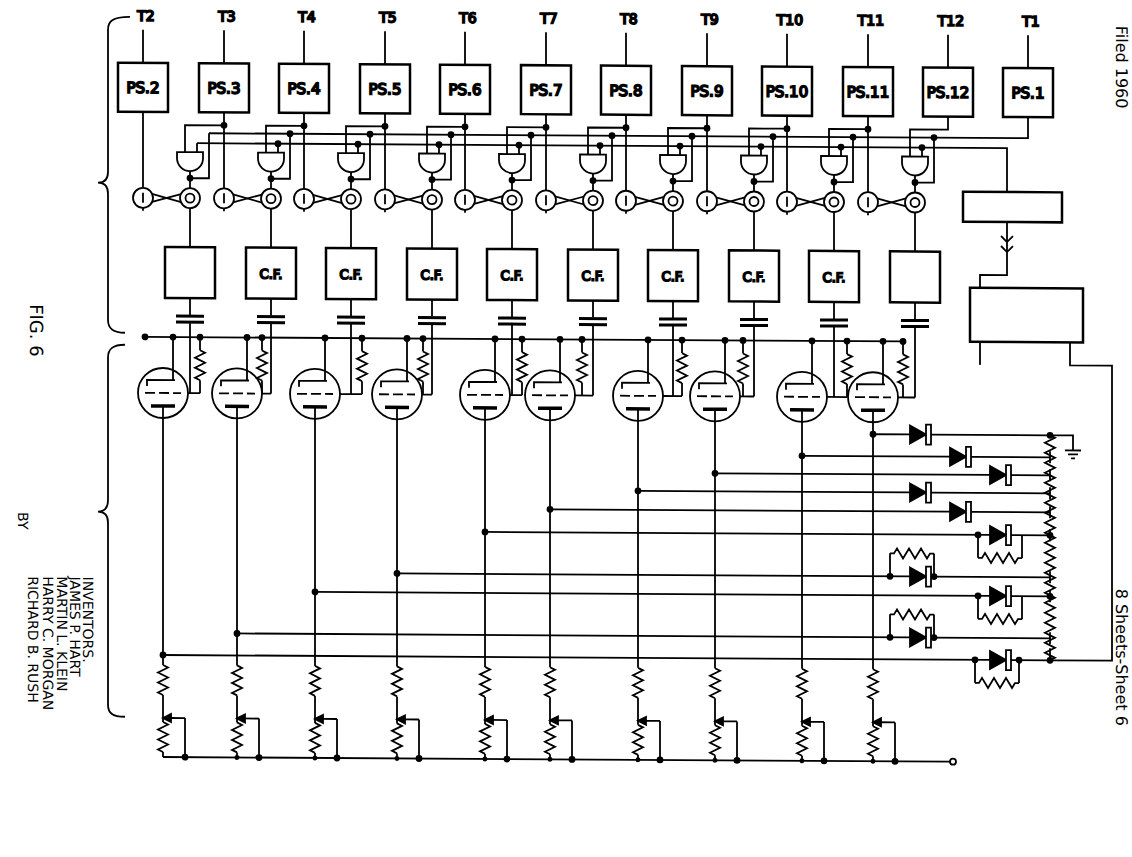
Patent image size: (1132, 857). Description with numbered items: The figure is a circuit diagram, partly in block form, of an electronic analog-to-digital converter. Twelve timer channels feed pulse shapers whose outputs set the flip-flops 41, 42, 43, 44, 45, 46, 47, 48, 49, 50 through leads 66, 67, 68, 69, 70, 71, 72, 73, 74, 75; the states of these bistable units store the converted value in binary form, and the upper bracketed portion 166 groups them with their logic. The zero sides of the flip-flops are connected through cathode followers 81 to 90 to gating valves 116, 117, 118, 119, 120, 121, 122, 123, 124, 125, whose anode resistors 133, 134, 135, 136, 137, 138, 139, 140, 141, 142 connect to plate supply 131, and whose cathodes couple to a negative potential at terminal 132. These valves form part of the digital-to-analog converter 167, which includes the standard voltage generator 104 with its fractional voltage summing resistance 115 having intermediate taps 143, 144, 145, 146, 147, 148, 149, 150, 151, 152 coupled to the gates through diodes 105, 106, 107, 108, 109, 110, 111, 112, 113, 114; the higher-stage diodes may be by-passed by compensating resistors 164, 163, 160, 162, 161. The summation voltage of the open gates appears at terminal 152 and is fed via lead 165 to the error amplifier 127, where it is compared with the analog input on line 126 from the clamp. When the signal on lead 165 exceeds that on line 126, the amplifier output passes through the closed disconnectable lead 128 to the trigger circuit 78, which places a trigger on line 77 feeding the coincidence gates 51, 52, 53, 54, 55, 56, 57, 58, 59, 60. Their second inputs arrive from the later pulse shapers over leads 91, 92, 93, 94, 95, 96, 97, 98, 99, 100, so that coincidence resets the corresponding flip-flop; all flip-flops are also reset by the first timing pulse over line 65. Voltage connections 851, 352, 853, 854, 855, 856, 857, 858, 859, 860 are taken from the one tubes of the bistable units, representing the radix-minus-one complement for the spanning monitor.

The flip-flop 41 is at (162, 205).
The flip-flop 42 is at (243, 205).
The flip-flop 43 is at (323, 205).
The flip-flop 44 is at (404, 205).
The flip-flop 45 is at (484, 205).
The flip-flop 46 is at (565, 205).
The flip-flop 47 is at (645, 205).
The flip-flop 48 is at (726, 205).
The flip-flop 49 is at (806, 205).
The flip-flop 50 is at (924, 206).
The coincidence gate 51 is at (181, 171).
The coincidence gate 52 is at (262, 171).
The coincidence gate 53 is at (342, 171).
The coincidence gate 54 is at (423, 171).
The coincidence gate 55 is at (503, 171).
The coincidence gate 56 is at (584, 171).
The coincidence gate 57 is at (664, 171).
The coincidence gate 58 is at (745, 171).
The coincidence gate 59 is at (825, 171).
The coincidence gate 60 is at (906, 171).
The reset line 65 is at (1032, 135).
The lead 66 is at (143, 140).
The lead 67 is at (227, 173).
The lead 68 is at (307, 173).
The lead 69 is at (388, 173).
The lead 70 is at (468, 173).
The lead 71 is at (549, 173).
The lead 72 is at (629, 173).
The lead 73 is at (710, 173).
The lead 74 is at (790, 173).
The lead 75 is at (871, 173).
The trigger line 77 is at (1010, 164).
The trigger circuit 78 is at (1063, 188).
The cathode follower 81 is at (165, 274).
The cathode follower 90 is at (941, 266).
The lead 91 is at (183, 123).
The lead 92 is at (264, 123).
The lead 93 is at (344, 123).
The lead 94 is at (425, 123).
The lead 95 is at (505, 123).
The lead 96 is at (586, 123).
The lead 97 is at (666, 123).
The lead 98 is at (747, 123).
The lead 99 is at (827, 123).
The lead 100 is at (924, 124).
The standard voltage generator 104 is at (165, 535).
The diode 105 is at (930, 427).
The diode 106 is at (948, 457).
The diode 107 is at (1008, 468).
The diode 108 is at (910, 486).
The diode 109 is at (965, 505).
The diode 110 is at (1000, 529).
The diode 111 is at (906, 576).
The diode 112 is at (1003, 591).
The diode 113 is at (906, 638).
The diode 114 is at (988, 653).
The fractional voltage summing resistance 115 is at (1060, 546).
The gating valve 116 is at (180, 405).
The gating valve 117 is at (254, 405).
The gating valve 118 is at (332, 405).
The gating valve 119 is at (414, 405).
The gating valve 120 is at (502, 405).
The gating valve 121 is at (567, 405).
The gating valve 122 is at (655, 405).
The gating valve 123 is at (732, 405).
The gating valve 124 is at (790, 410).
The gating valve 125 is at (858, 410).
The analog input line 126 is at (985, 350).
The error amplifier 127 is at (1043, 285).
The disconnectable lead 128 is at (1018, 255).
The plate supply 131 is at (957, 757).
The negative potential terminal 132 is at (518, 351).
The anode resistor 133 is at (168, 673).
The anode resistor 134 is at (242, 673).
The anode resistor 135 is at (320, 673).
The anode resistor 136 is at (402, 673).
The anode resistor 137 is at (490, 673).
The anode resistor 138 is at (555, 673).
The anode resistor 139 is at (643, 673).
The anode resistor 140 is at (720, 673).
The anode resistor 141 is at (807, 673).
The anode resistor 142 is at (878, 673).
The intermediate tap 143 is at (1080, 442).
The intermediate tap 144 is at (1056, 633).
The intermediate tap 145 is at (1056, 591).
The intermediate tap 146 is at (1056, 572).
The intermediate tap 147 is at (1056, 530).
The intermediate tap 148 is at (1056, 507).
The intermediate tap 149 is at (1056, 488).
The intermediate tap 150 is at (1056, 470).
The intermediate tap 151 is at (1045, 452).
The terminal 152 is at (1052, 658).
The compensating resistor 160 is at (998, 616).
The compensating resistor 161 is at (997, 683).
The compensating resistor 162 is at (925, 610).
The compensating resistor 163 is at (925, 549).
The compensating resistor 164 is at (985, 555).
The lead 165 is at (1076, 351).
The counter section 166 is at (93, 174).
The digital to analog converter 167 is at (93, 530).
The voltage connection 851 is at (142, 210).
The flip-flop output lead 352 is at (223, 210).
The voltage connection 853 is at (303, 210).
The voltage connection 854 is at (384, 210).
The voltage connection 855 is at (464, 210).
The voltage connection 856 is at (545, 210).
The voltage connection 857 is at (625, 210).
The voltage connection 858 is at (706, 210).
The voltage connection 859 is at (786, 210).
The voltage connection 860 is at (867, 210).